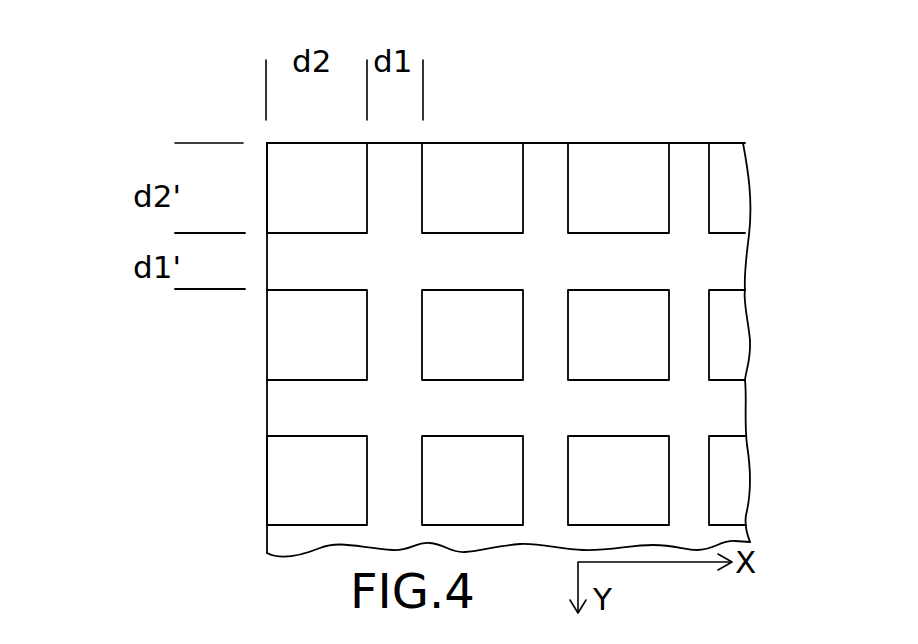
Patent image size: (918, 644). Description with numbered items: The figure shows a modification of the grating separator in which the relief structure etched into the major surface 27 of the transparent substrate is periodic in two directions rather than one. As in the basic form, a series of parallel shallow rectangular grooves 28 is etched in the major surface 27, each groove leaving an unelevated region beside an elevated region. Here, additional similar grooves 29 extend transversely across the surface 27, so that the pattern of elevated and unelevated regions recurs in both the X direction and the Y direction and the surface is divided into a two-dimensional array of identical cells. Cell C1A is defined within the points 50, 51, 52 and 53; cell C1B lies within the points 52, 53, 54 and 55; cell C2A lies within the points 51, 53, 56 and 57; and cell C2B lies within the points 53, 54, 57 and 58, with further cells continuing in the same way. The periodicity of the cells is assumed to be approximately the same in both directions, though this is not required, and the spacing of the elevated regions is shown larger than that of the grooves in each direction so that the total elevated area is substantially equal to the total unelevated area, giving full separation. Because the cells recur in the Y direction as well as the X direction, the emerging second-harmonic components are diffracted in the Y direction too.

The major surface 27 is at (310, 192).
The grooves 28 is at (690, 207).
The additional grooves 29 is at (352, 267).
The point 50 is at (708, 143).
The point 51 is at (568, 143).
The point 52 is at (710, 290).
The point 53 is at (568, 290).
The point 54 is at (568, 437).
The point 55 is at (710, 437).
The point 56 is at (423, 143).
The point 57 is at (422, 290).
The point 58 is at (422, 436).
The cell C1A is at (643, 197).
The cell C2A is at (502, 165).
The cell C1B is at (632, 393).
The cell C2B is at (487, 363).